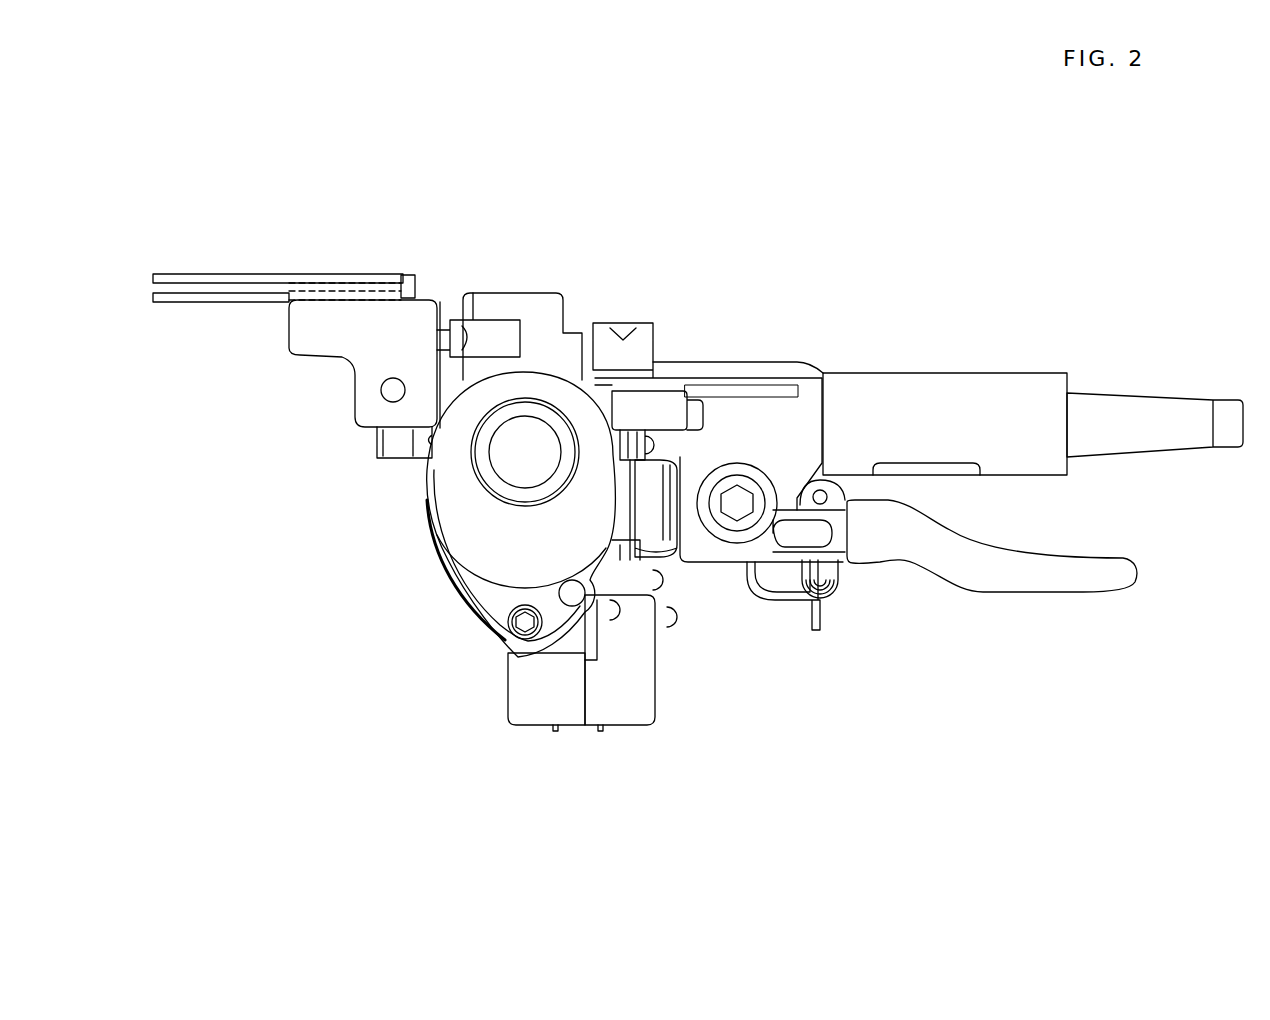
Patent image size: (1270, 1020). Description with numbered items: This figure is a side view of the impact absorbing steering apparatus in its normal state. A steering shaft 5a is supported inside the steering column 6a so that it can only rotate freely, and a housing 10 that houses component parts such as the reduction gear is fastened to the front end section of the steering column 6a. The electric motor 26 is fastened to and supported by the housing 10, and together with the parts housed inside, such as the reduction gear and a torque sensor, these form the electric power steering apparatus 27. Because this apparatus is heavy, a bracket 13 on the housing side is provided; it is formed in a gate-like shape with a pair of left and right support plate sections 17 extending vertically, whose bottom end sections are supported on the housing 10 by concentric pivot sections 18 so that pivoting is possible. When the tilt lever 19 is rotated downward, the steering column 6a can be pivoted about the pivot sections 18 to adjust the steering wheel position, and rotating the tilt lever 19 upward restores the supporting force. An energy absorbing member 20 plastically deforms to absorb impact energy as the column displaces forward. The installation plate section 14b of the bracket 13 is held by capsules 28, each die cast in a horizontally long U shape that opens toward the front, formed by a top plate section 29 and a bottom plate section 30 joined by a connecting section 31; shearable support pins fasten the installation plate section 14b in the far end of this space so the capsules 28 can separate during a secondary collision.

The steering shaft 5a is at (1175, 410).
The steering column 6a is at (975, 385).
The housing 10 is at (627, 697).
The bracket on the housing side 13 is at (313, 330).
The installation plate section 14b is at (320, 290).
The support plate sections 17 is at (374, 333).
The pivot sections 18 is at (393, 400).
The tilt lever 19 is at (1049, 577).
The energy absorbing member 20 is at (727, 387).
The electric motor 26 is at (522, 470).
The electric power steering apparatus 27 is at (545, 700).
The capsules 28 is at (417, 280).
The top plate section 29 is at (190, 278).
The bottom plate section 30 is at (187, 303).
The connecting section 31 is at (415, 291).